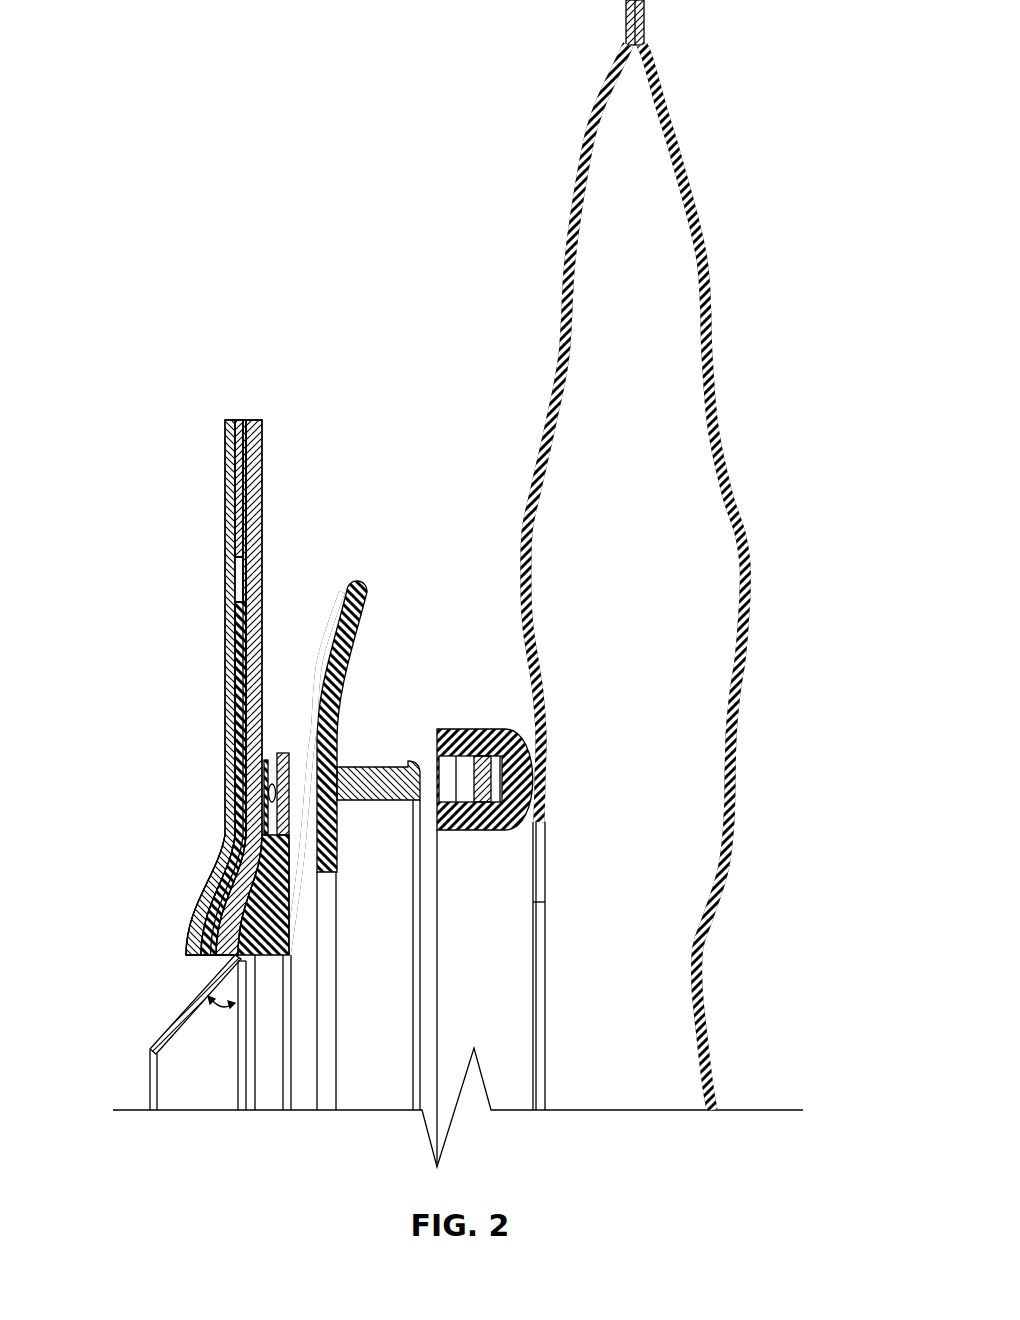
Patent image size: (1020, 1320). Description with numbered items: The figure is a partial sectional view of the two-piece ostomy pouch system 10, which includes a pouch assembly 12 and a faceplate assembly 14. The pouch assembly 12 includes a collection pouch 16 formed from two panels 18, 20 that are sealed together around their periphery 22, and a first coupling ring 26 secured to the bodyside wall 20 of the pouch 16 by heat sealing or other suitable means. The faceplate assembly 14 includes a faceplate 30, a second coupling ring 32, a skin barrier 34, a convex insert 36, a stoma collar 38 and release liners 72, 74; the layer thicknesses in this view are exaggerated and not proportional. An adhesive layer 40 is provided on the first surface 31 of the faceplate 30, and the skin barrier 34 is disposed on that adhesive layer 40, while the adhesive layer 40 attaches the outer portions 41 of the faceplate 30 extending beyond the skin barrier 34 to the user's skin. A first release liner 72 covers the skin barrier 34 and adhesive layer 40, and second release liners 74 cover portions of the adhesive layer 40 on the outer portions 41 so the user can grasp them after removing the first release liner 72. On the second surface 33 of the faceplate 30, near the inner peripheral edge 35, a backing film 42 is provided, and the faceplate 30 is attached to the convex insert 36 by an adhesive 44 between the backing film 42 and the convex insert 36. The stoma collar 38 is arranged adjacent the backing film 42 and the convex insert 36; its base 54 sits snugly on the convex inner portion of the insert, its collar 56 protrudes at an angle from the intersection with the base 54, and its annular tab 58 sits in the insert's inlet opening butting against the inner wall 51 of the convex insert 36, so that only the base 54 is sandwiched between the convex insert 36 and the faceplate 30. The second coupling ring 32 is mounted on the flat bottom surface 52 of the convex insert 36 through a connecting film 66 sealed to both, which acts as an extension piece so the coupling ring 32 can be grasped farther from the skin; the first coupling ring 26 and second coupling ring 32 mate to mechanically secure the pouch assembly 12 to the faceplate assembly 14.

The two-piece ostomy pouch system 10 is at (418, 118).
The pouch assembly 12 is at (488, 593).
The faceplate assembly 14 is at (323, 420).
The collection pouch 16 is at (634, 555).
The panel 18 is at (712, 333).
The bodyside wall 20 is at (565, 332).
The periphery 22 is at (645, 32).
The first coupling ring 26 is at (455, 728).
The faceplate 30 is at (235, 659).
The first surface 31 is at (248, 420).
The second coupling ring 32 is at (365, 767).
The second surface 33 is at (262, 583).
The skin barrier 34 is at (233, 635).
The inner peripheral edge 35 is at (218, 962).
The convex insert 36 is at (268, 933).
The stoma collar 38 is at (153, 1047).
The adhesive layer 40 is at (235, 420).
The outer portions 41 is at (247, 478).
The backing film 42 is at (265, 760).
The adhesive 44 is at (274, 757).
The inner wall 51 is at (255, 963).
The bottom surface 52 is at (290, 855).
The base 54 is at (217, 873).
The collar 56 is at (177, 1018).
The annular tab 58 is at (243, 962).
The connecting film 66 is at (296, 904).
The first release liner 72 is at (230, 522).
The second release liner 74 is at (237, 447).